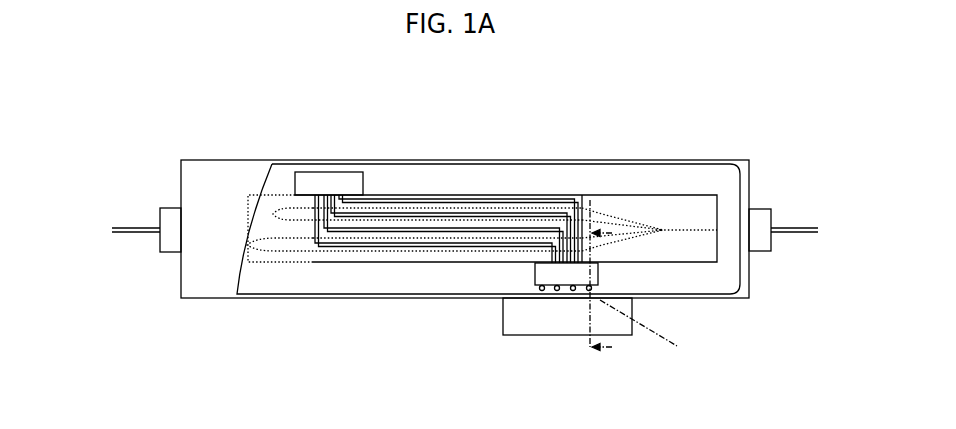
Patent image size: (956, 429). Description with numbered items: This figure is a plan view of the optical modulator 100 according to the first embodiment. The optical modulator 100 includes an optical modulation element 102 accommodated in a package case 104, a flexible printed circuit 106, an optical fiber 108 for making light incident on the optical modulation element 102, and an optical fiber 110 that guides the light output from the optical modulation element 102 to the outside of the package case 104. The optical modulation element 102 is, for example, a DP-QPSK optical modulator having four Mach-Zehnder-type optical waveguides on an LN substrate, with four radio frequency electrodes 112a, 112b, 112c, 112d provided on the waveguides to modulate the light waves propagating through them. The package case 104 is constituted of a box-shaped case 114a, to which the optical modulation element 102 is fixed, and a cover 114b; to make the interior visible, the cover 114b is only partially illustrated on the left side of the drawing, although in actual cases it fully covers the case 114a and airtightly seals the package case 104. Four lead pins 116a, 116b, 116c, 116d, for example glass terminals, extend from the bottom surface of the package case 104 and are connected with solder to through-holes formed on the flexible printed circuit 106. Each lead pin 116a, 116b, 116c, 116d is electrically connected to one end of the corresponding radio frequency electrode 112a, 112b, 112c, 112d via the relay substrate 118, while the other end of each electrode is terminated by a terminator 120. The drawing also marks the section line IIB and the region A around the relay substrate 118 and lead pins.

The optical modulator 100 is at (215, 89).
The optical modulation element 102 is at (608, 195).
The package case 104 is at (482, 165).
The flexible printed circuit 106 is at (503, 311).
The optical fiber 108 is at (787, 226).
The optical fiber 110 is at (135, 230).
The radio frequency electrode 112a is at (584, 258).
The radio frequency electrode 112b is at (580, 263).
The radio frequency electrode 112c is at (562, 263).
The radio frequency electrode 112d is at (554, 259).
The case 114a is at (297, 162).
The cover 114b is at (252, 172).
The lead pin 116a is at (592, 291).
The lead pin 116b is at (573, 291).
The lead pin 116c is at (557, 291).
The lead pin 116d is at (543, 291).
The relay substrate 118 is at (584, 292).
The terminator 120 is at (355, 177).
The section line IIB is at (614, 281).
The region A is at (646, 330).